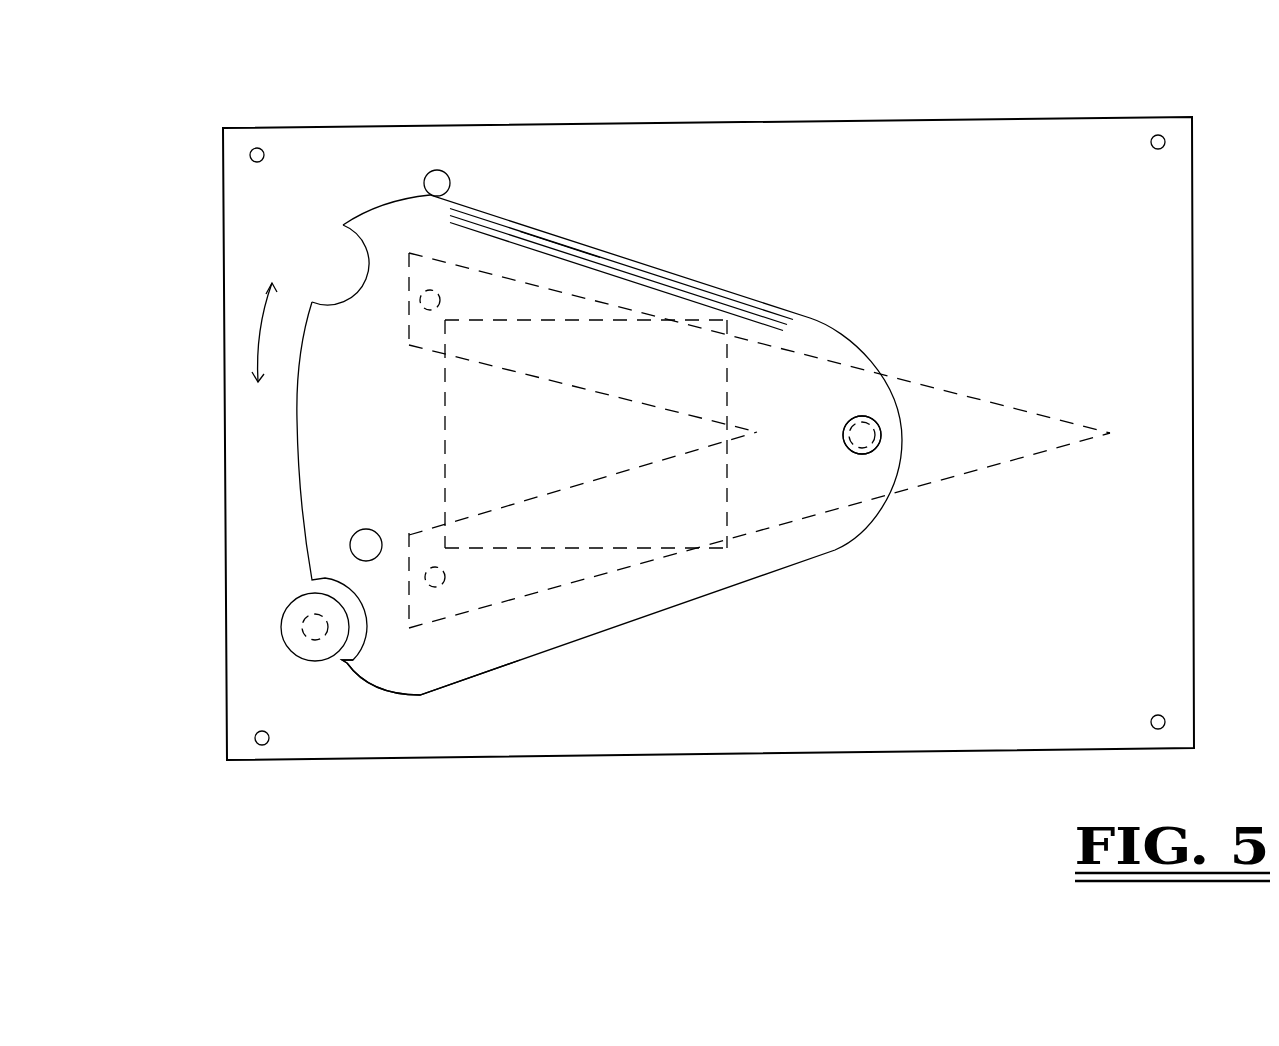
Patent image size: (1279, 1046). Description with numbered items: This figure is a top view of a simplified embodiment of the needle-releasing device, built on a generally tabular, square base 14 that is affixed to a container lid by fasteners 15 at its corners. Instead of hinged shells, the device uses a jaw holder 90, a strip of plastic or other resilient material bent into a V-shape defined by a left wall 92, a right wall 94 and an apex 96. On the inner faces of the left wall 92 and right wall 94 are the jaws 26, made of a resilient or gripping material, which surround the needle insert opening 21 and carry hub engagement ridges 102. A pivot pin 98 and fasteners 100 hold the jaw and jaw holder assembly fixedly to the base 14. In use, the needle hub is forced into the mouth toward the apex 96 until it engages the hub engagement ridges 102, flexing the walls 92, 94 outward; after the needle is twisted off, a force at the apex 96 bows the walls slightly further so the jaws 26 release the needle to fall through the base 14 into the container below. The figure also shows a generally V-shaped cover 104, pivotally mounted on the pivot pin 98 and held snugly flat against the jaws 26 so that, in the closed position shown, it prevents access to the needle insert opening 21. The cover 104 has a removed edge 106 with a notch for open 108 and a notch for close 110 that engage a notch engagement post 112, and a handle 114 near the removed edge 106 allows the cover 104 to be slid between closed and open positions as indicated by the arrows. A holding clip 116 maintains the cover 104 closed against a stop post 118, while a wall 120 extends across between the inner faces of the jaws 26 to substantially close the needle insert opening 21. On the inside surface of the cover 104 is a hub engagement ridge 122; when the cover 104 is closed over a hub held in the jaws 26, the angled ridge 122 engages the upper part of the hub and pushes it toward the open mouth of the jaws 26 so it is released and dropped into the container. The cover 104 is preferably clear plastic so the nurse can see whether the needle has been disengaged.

The base 14 is at (907, 188).
The fasteners 15 is at (1158, 135).
The needle insert opening 21 is at (537, 435).
The jaws 26 is at (673, 365).
The jaw holder 90 is at (525, 597).
The left wall 92 is at (700, 562).
The right wall 94 is at (611, 253).
The apex 96 is at (862, 407).
The pivot pin 98 is at (867, 437).
The fasteners 100 is at (430, 297).
The hub engagement ridges 102 is at (618, 473).
The cover 104 is at (423, 677).
The removed edge 106 is at (296, 448).
The notch for open 108 is at (366, 268).
The notch for close 110 is at (343, 662).
The notch engagement post 112 is at (297, 627).
The handle 114 is at (366, 545).
The holding clip 116 is at (860, 452).
The stop post 118 is at (436, 170).
The wall 120 is at (445, 394).
The hub engagement ridge 122 is at (563, 247).